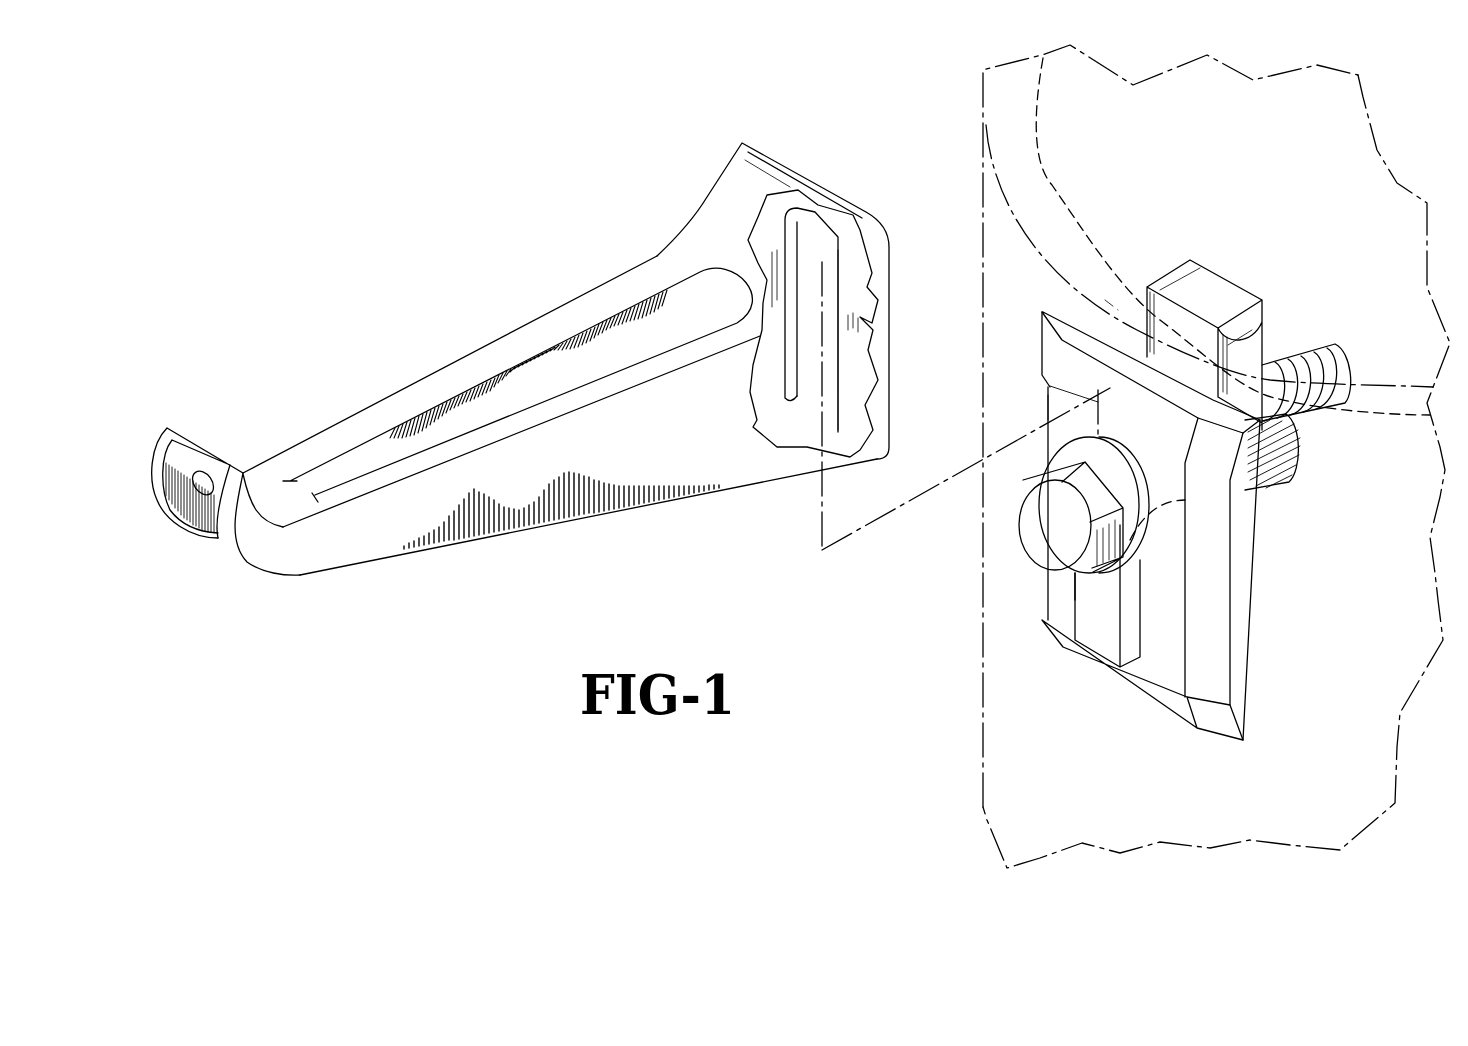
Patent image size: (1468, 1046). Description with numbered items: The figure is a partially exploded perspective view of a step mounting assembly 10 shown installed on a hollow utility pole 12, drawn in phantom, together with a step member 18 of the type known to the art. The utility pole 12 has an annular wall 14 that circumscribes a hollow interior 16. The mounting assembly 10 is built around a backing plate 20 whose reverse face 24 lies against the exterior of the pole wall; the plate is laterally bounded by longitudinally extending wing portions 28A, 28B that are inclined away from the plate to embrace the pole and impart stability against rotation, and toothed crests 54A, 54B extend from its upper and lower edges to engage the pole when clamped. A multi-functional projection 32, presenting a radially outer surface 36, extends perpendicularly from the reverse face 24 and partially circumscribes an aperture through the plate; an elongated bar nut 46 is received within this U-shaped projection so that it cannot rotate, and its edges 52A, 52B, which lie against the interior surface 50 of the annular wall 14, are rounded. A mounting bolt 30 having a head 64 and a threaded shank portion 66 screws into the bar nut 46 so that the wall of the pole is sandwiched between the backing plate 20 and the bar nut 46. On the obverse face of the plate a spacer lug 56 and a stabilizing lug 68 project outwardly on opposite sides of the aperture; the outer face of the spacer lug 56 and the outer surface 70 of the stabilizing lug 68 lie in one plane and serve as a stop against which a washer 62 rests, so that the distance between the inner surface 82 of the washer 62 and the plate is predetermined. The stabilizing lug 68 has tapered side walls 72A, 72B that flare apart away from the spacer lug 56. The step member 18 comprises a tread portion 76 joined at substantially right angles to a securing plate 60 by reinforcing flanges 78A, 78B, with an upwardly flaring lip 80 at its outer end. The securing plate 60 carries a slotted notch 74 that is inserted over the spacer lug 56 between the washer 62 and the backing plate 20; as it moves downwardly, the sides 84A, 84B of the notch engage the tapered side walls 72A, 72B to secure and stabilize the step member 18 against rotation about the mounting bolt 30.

The step mounting assembly 10 is at (1113, 743).
The utility pole 12 is at (985, 122).
The annular wall 14 is at (1020, 175).
The hollow interior 16 is at (1288, 163).
The step member 18 is at (514, 430).
The backing plate 20 is at (1132, 519).
The reverse face 24 is at (1110, 305).
The wing portion 28A is at (1043, 583).
The wing portion 28B is at (1205, 645).
The mounting bolt 30 is at (1344, 391).
The multi-functional projection 32 is at (1316, 483).
The radially outer surface 36 is at (1266, 472).
The elongated bar nut 46 is at (1254, 323).
The interior surface 50 is at (1060, 193).
The edge of bar nut 52A is at (1150, 285).
The edge of bar nut 52B is at (1260, 330).
The toothed crest 54A is at (1110, 333).
The toothed crest 54B is at (1247, 727).
The spacer lug 56 is at (1110, 438).
The securing plate 60 is at (798, 341).
The washer 62 is at (1143, 547).
The head 64 is at (1040, 520).
The threaded shank portion 66 is at (1313, 410).
The stabilizing lug 68 is at (1100, 603).
The outer surface 70 is at (1107, 643).
The tapered side wall 72A is at (1047, 608).
The tapered side wall 72B is at (1165, 605).
The slotted notch 74 is at (809, 374).
The tread portion 76 is at (350, 440).
The reinforcing flange 78A is at (578, 372).
The reinforcing flange 78B is at (355, 530).
The upwardly flaring lip 80 is at (190, 443).
The inner surface 82 is at (1150, 512).
The side of slotted notch 84A is at (797, 398).
The side of slotted notch 84B is at (827, 343).